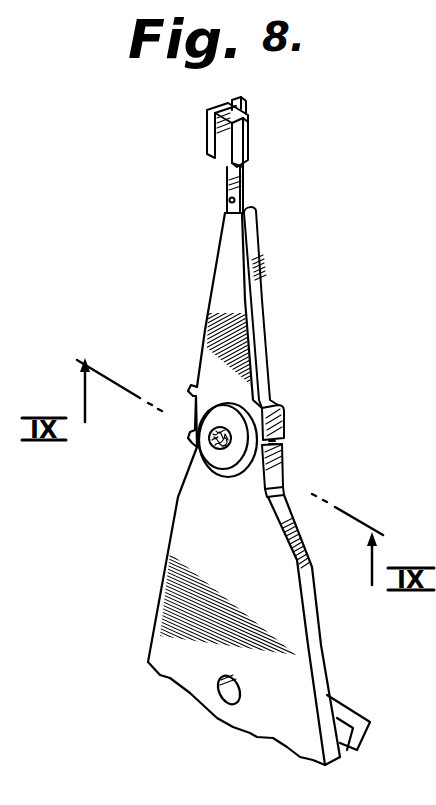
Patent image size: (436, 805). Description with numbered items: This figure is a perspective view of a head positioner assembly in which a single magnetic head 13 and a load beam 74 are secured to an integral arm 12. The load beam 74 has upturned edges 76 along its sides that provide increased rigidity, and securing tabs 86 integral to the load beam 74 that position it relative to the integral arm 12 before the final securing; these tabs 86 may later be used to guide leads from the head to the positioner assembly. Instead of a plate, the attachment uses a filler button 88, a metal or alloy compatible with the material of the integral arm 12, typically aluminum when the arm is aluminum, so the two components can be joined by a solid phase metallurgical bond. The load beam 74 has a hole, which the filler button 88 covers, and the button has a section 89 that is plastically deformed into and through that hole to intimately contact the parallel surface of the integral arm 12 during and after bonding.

The integral arm 12 is at (140, 616).
The magnetic head 13 is at (206, 136).
The load beam 74 is at (232, 262).
The upturned edges 76 is at (263, 347).
The securing tabs 86 is at (285, 486).
The filler button 88 is at (228, 465).
The section of filler button 89 is at (218, 448).